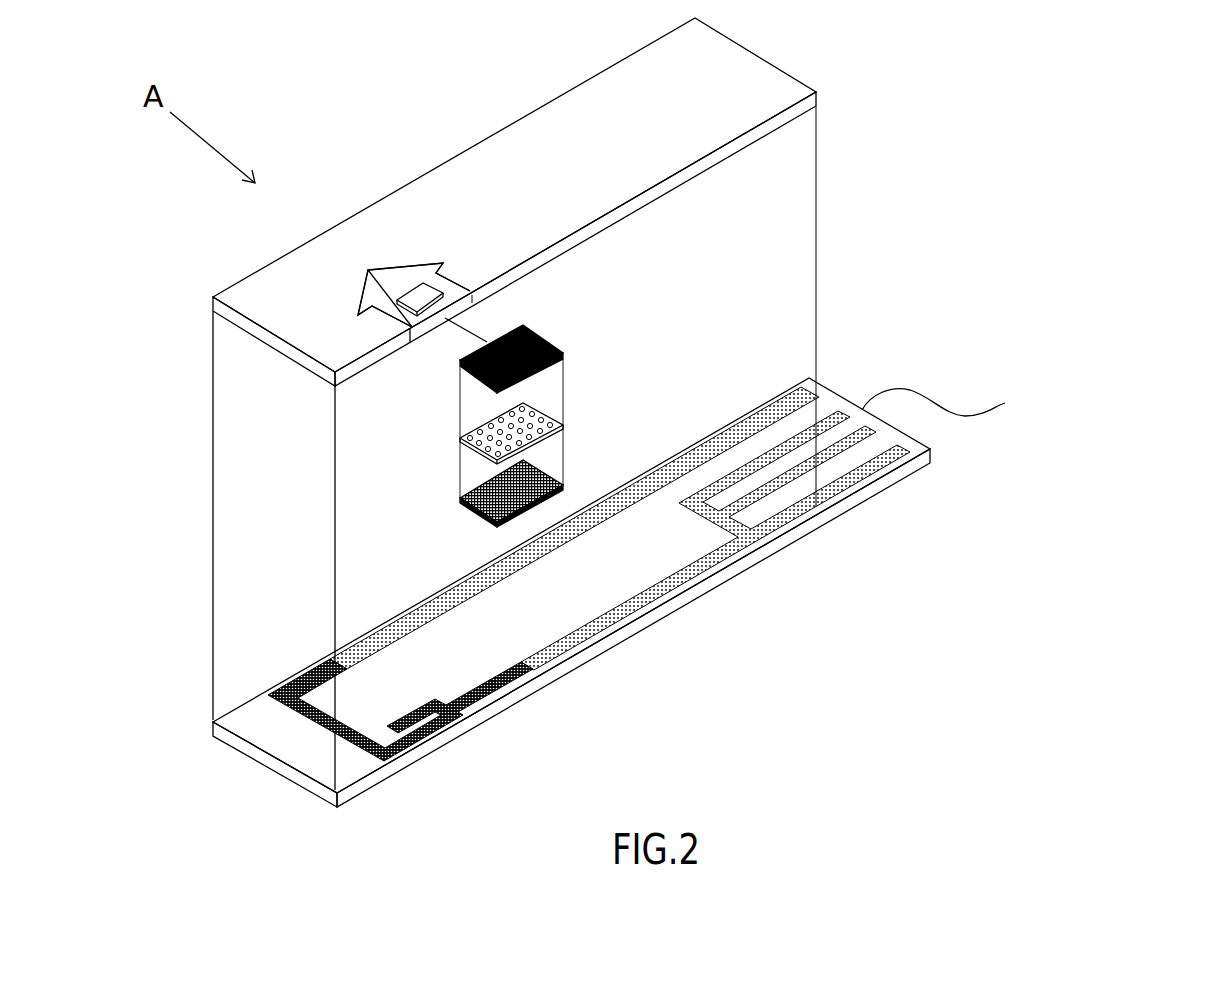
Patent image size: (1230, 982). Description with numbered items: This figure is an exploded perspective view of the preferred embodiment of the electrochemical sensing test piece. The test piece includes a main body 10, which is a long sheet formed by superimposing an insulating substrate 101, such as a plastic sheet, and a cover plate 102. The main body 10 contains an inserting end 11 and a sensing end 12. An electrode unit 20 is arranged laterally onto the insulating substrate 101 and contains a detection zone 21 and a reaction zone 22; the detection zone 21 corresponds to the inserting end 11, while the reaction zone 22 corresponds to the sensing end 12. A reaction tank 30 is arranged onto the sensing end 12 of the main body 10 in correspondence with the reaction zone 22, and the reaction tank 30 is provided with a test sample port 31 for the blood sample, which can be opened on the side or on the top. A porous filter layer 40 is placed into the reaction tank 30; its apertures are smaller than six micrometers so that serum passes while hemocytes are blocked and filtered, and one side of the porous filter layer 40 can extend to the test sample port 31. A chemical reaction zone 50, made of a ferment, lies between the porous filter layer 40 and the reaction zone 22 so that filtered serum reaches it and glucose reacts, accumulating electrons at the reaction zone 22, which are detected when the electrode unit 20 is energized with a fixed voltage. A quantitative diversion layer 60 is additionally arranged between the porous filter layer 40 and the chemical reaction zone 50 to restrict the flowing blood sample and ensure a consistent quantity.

The main body 10 is at (714, 412).
The insulating substrate 101 is at (676, 592).
The cover plate 102 is at (816, 105).
The inserting end 11 is at (944, 398).
The sensing end 12 is at (262, 752).
The electrode unit 20 is at (589, 598).
The detection zone 21 is at (851, 474).
The reaction zone 22 is at (523, 657).
The reaction tank 30 is at (423, 335).
The test sample port 31 is at (440, 282).
The porous filter layer 40 is at (563, 349).
The chemical reaction zone 50 is at (548, 470).
The quantitative diversion layer 60 is at (548, 412).